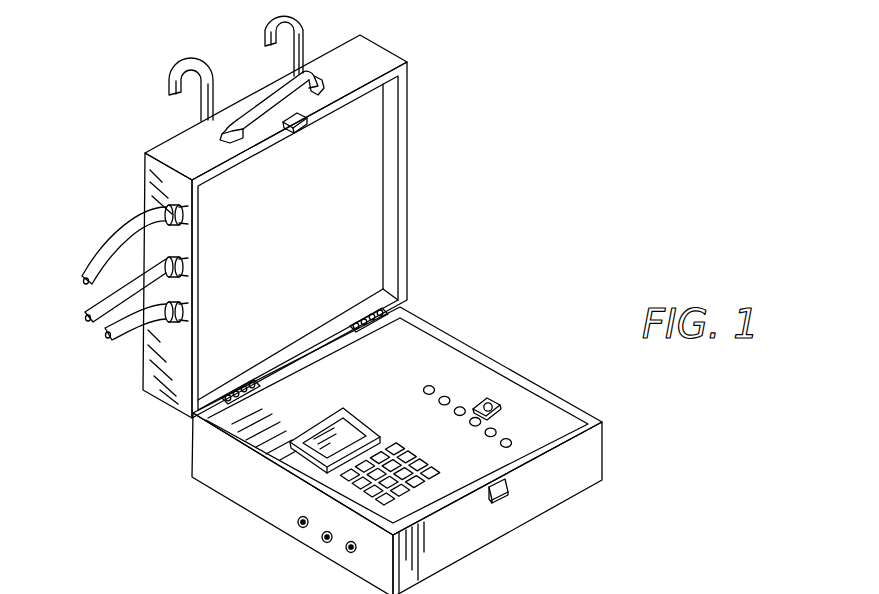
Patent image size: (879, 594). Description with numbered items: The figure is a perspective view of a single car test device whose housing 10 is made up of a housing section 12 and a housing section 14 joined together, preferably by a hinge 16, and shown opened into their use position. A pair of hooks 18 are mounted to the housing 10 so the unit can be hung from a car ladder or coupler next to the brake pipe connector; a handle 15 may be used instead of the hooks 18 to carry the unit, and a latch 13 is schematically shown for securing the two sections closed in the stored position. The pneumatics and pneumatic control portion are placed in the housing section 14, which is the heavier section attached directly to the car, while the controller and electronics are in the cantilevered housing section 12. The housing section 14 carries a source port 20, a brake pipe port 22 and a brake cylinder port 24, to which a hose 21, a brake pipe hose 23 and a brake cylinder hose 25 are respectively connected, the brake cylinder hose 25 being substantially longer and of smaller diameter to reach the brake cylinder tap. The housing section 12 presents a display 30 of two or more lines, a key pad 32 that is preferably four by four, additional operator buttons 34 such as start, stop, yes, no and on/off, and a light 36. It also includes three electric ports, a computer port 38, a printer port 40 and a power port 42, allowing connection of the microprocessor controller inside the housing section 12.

The housing 10 is at (602, 250).
The housing section 12 is at (498, 352).
The latch 13 is at (299, 130).
The housing section 14 is at (412, 194).
The handle 15 is at (264, 100).
The hinge 16 is at (238, 386).
The hooks 18 is at (204, 64).
The source port 20 is at (189, 215).
The hose 21 is at (98, 259).
The brake pipe port 22 is at (188, 264).
The brake pipe hose 23 is at (88, 309).
The brake cylinder port 24 is at (188, 311).
The brake cylinder hose 25 is at (126, 341).
The display 30 is at (350, 427).
The key pad 32 is at (432, 444).
The buttons 34 is at (449, 387).
The light 36 is at (493, 404).
The computer port 38 is at (299, 526).
The printer port 40 is at (324, 541).
The power port 42 is at (349, 552).